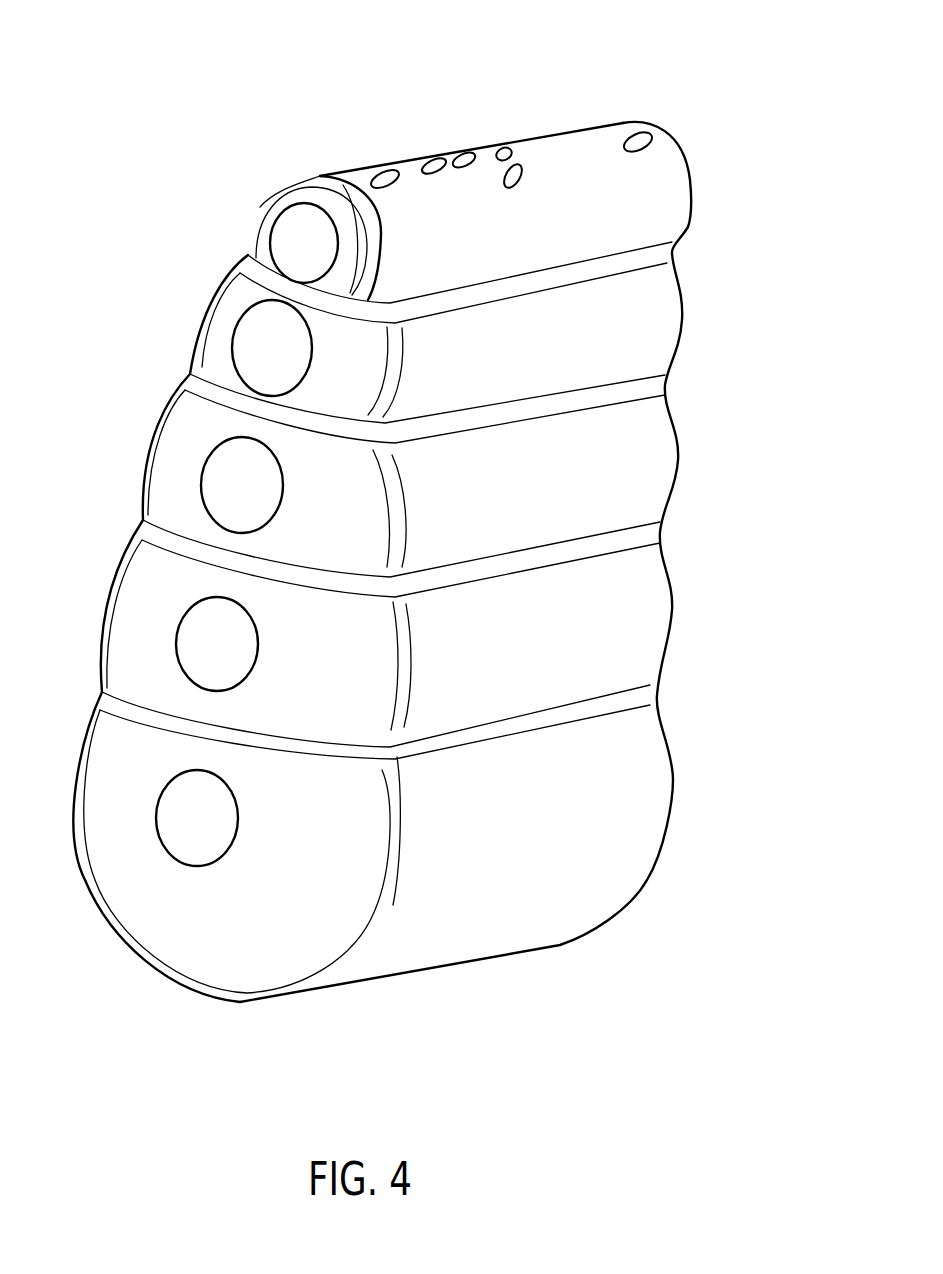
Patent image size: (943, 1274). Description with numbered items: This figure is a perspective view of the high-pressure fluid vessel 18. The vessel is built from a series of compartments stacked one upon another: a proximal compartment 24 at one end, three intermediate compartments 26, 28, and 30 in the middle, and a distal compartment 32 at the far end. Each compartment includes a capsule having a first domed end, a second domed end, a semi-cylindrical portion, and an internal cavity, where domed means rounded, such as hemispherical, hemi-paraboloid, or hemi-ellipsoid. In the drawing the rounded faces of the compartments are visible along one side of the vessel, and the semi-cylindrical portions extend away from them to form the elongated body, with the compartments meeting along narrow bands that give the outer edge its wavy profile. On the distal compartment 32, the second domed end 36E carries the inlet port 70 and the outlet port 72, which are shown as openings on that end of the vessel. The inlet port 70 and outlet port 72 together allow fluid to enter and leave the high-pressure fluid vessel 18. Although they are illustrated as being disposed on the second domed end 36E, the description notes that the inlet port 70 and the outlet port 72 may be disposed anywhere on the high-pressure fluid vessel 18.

The high-pressure fluid vessel 18 is at (424, 508).
The proximal compartment 24 is at (687, 815).
The intermediate compartment 26 is at (687, 605).
The intermediate compartment 28 is at (687, 455).
The intermediate compartment 30 is at (697, 305).
The distal compartment 32 is at (483, 187).
The second domed end 36E is at (287, 197).
The inlet port 70 is at (377, 177).
The outlet port 72 is at (623, 140).